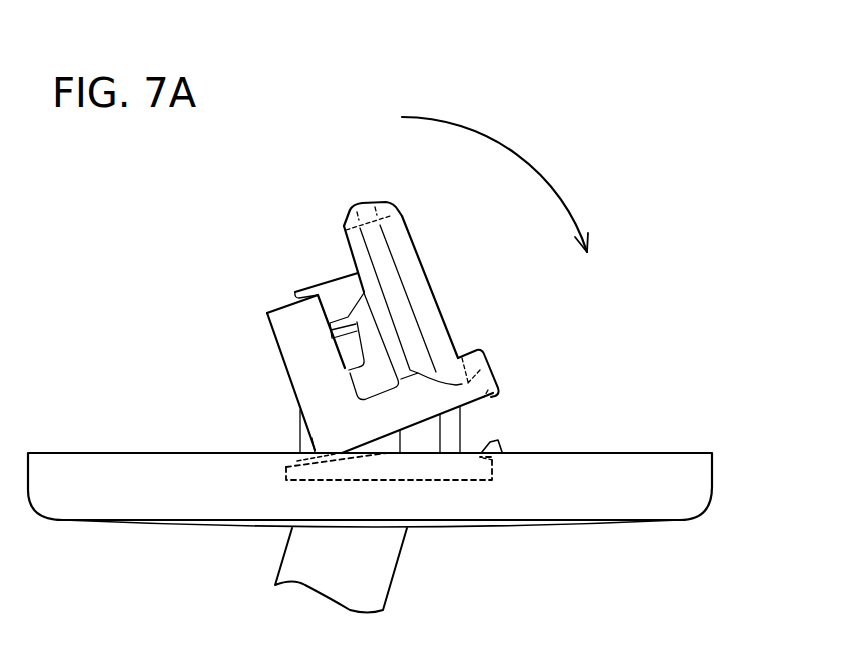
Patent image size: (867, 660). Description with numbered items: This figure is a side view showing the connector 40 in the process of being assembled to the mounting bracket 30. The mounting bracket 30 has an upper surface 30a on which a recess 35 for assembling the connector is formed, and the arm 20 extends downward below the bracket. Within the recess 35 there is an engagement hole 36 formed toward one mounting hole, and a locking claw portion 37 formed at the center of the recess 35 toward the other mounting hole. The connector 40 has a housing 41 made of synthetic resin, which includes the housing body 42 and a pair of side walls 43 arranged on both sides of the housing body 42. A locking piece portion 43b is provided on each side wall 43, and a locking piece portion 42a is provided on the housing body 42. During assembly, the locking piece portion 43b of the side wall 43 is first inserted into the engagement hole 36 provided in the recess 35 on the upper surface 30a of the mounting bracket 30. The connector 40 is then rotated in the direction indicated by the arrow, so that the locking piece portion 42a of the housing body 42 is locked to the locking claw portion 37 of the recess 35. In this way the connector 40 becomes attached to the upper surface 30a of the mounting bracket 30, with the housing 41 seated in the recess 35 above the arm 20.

The arm 20 is at (403, 562).
The mounting bracket 30 is at (379, 487).
The upper surface 30a is at (129, 452).
The recess for assembling the connector 35 is at (398, 472).
The engagement hole 36 is at (303, 455).
The locking claw portion 37 is at (502, 446).
The connector 40 is at (326, 207).
The housing 41 is at (326, 276).
The housing body 42 is at (418, 298).
The locking piece portion 42a is at (488, 362).
The side wall 43 is at (300, 333).
The locking piece portion 43b is at (315, 450).